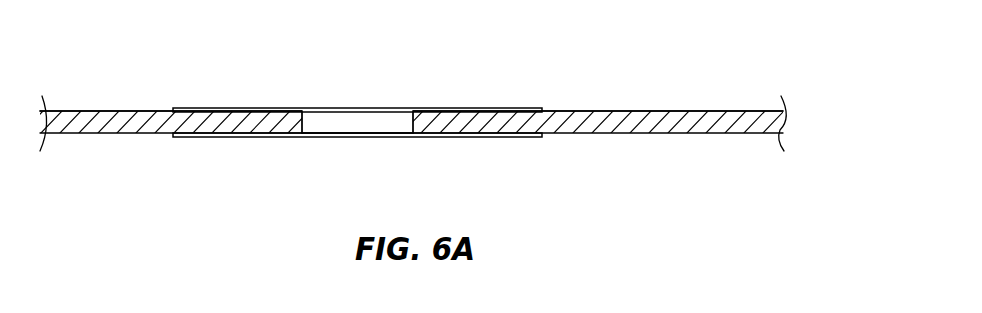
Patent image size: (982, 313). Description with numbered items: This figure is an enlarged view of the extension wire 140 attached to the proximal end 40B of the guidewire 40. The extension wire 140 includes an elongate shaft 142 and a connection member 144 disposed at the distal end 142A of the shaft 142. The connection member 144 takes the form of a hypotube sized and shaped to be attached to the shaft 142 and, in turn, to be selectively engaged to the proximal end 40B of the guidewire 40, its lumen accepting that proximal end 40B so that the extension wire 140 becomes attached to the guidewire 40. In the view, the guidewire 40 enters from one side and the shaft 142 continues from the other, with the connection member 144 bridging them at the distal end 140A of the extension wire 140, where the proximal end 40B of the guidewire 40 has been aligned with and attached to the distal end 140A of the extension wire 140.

The extension wire 140 is at (672, 111).
The elongate shaft 142 is at (567, 110).
The guidewire 40 is at (150, 110).
The proximal end of the guidewire 40B is at (304, 120).
The distal end of the extension wire 140A is at (175, 137).
The distal end of the shaft 142A is at (411, 121).
The connection member 144 is at (379, 138).